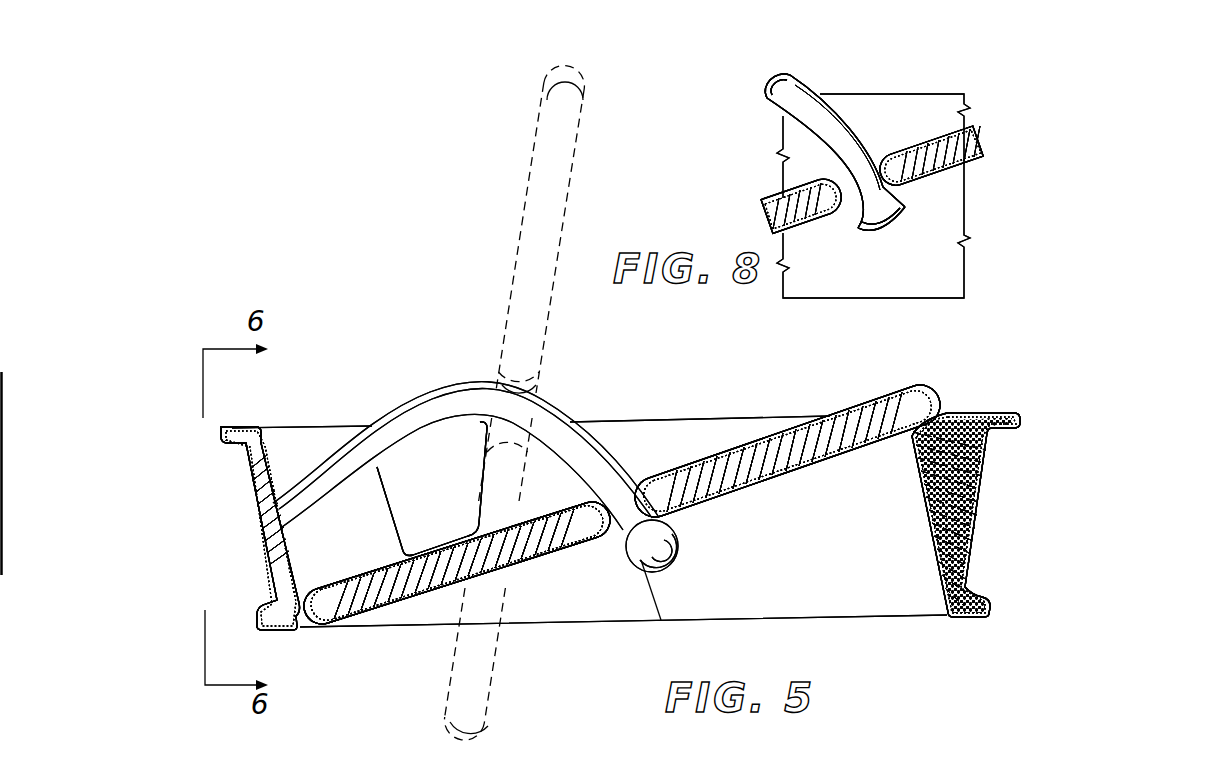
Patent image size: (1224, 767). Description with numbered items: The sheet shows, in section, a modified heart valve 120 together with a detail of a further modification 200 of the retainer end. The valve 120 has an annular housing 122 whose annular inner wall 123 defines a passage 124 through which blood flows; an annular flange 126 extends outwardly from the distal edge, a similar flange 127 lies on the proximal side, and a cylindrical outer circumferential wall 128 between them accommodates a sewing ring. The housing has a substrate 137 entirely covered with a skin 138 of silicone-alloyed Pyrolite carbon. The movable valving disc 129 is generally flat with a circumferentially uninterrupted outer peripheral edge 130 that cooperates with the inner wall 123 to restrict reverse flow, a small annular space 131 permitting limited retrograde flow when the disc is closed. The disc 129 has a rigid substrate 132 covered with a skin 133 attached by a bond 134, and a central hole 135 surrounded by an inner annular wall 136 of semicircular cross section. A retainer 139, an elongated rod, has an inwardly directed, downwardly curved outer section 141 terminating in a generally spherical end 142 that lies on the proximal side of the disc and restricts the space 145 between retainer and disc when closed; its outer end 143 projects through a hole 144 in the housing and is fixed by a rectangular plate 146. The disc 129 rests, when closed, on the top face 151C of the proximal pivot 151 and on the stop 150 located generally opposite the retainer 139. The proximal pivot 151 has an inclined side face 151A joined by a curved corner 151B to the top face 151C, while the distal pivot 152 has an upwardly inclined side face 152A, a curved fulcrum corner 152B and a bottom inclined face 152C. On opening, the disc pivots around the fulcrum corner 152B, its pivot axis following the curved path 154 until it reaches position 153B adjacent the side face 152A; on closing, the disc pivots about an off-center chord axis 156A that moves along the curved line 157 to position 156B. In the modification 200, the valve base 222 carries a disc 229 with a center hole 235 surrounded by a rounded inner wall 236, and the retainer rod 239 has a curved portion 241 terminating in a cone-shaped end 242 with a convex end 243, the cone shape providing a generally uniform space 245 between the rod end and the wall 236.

In FIG. 5, the heart valve 120 is at (432, 366).
In FIG. 5, the annular housing 122 is at (986, 405).
In FIG. 5, the annular inner wall 123 is at (917, 580).
In FIG. 5, the passage 124 is at (589, 521).
In FIG. 5, the annular flange 126 is at (234, 428).
In FIG. 5, the outwardly directed flange 127 is at (255, 633).
In FIG. 5, the cylindrical outer circumferential wall 128 is at (980, 513).
In FIG. 5, the valving disc 129 is at (520, 195).
In FIG. 5, the outer peripheral edge 130 is at (930, 392).
In FIG. 5, the annular space 131 is at (303, 628).
In FIG. 5, the substrate 132 is at (815, 448).
In FIG. 5, the skin 133 is at (771, 478).
In FIG. 5, the bond 134 is at (738, 456).
In FIG. 5, the hole 135 is at (641, 482).
In FIG. 5, the inner annular wall 136 is at (665, 472).
In FIG. 5, the housing substrate 137 is at (966, 478).
In FIG. 5, the housing skin 138 is at (1000, 411).
In FIG. 5, the retainer 139 is at (463, 376).
In FIG. 5, the curved outer section 141 is at (545, 404).
In FIG. 5, the spherical end 142 is at (623, 547).
In FIG. 5, the outer end 143 is at (268, 516).
In FIG. 5, the hole 144 is at (274, 523).
In FIG. 5, the space 145 is at (684, 566).
In FIG. 5, the rectangular plate 146 is at (262, 533).
In FIG. 5, the stop 150 is at (910, 436).
In FIG. 5, the proximal pivot 151 is at (590, 603).
In FIG. 5, the inclined side face 151A is at (502, 598).
In FIG. 5, the curved corner 151B is at (510, 567).
In FIG. 5, the top face 151C is at (547, 552).
In FIG. 5, the distal pivot 152 is at (424, 446).
In FIG. 5, the upwardly inclined side face 152A is at (478, 478).
In FIG. 5, the fulcrum corner 152B is at (468, 527).
In FIG. 5, the bottom inclined face 152C is at (447, 558).
In FIG. 5, the pivot axis position 153B is at (500, 493).
In FIG. 5, the curved path 154 is at (512, 517).
In FIG. 5, the off-center chord axis 156A is at (480, 604).
In FIG. 5, the closed pivot axis position 156B is at (548, 535).
In FIG. 5, the curved line 157 is at (483, 590).
In FIG. 8, the heart valve 200 is at (830, 70).
In FIG. 8, the valve base 222 is at (913, 102).
In FIG. 8, the disc 229 is at (988, 136).
In FIG. 8, the center hole 235 is at (880, 161).
In FIG. 8, the rounded inner wall 236 is at (906, 150).
In FIG. 8, the retainer rod 239 is at (803, 117).
In FIG. 8, the curved portion 241 is at (828, 118).
In FIG. 8, the end 242 is at (877, 213).
In FIG. 8, the convex end 243 is at (893, 223).
In FIG. 8, the space 245 is at (847, 207).